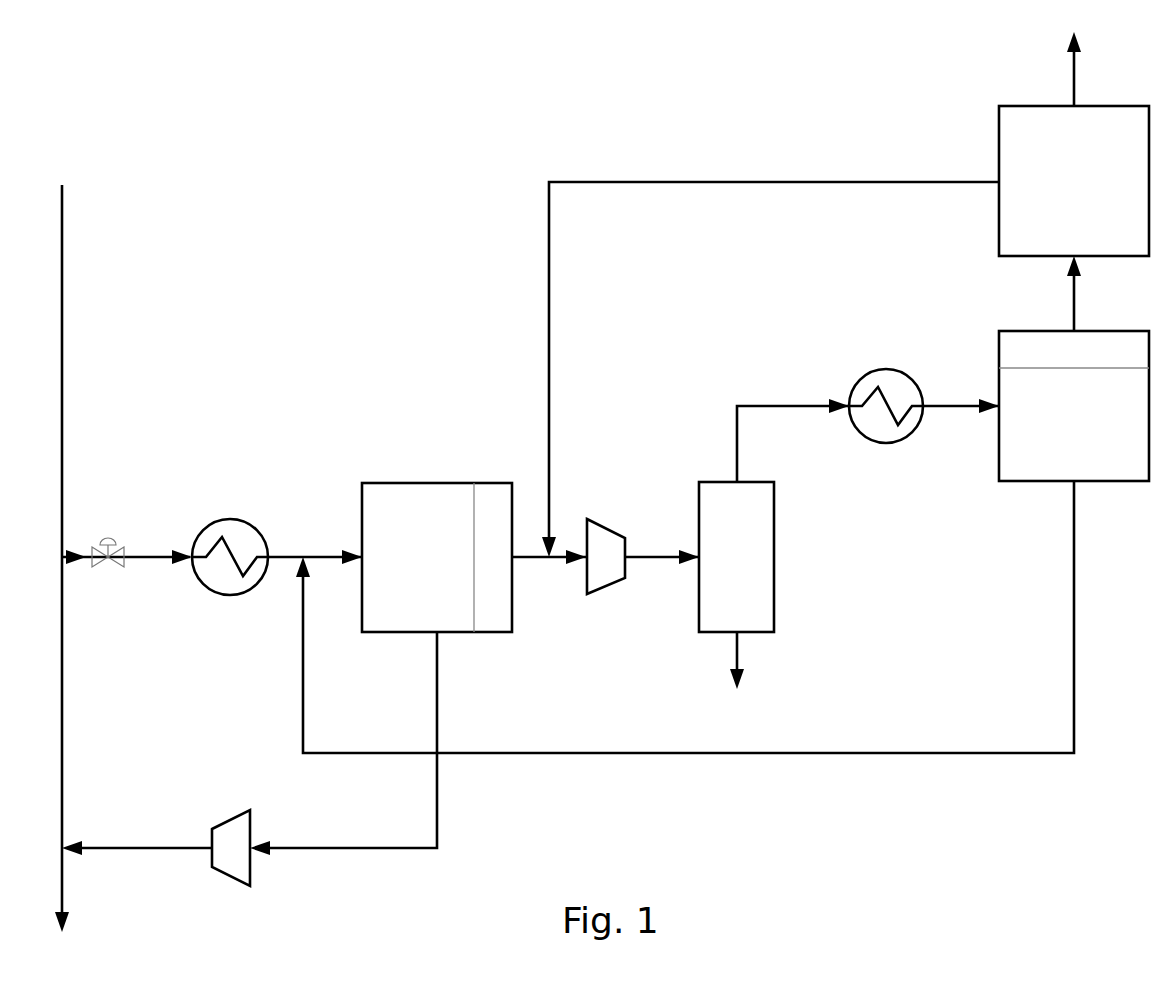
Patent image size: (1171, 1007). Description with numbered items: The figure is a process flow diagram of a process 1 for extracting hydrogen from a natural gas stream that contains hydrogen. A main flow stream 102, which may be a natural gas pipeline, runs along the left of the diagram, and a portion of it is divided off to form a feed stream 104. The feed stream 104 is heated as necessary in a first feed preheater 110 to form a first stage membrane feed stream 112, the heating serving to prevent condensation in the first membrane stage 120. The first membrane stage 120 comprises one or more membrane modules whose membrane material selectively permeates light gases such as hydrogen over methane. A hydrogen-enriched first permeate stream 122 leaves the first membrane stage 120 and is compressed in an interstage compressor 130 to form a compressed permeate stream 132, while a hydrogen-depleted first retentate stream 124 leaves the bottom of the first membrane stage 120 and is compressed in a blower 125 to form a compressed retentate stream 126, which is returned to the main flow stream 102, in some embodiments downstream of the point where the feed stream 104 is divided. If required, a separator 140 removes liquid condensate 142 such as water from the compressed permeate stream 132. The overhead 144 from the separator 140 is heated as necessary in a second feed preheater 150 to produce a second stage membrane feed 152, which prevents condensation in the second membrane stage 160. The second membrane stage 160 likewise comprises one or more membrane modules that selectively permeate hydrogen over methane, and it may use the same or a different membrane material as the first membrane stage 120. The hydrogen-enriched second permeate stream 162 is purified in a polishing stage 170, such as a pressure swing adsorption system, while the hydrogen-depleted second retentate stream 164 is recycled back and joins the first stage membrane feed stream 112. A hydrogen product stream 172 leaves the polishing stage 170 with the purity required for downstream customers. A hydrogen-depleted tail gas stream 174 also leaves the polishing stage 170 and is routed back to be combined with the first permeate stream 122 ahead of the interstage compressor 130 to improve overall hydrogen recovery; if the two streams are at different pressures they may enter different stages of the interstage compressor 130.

The system 1 is at (165, 106).
The main flow stream 102 is at (64, 318).
The feed stream 104 is at (157, 568).
The first feed preheater 110 is at (230, 518).
The first stage membrane feed stream 112 is at (325, 553).
The first membrane stage 120 is at (437, 557).
The first permeate stream 122 is at (530, 561).
The first retentate stream 124 is at (439, 658).
The blower 125 is at (228, 877).
The compressed retentate stream 126 is at (157, 843).
The interstage compressor 130 is at (605, 519).
The compressed permeate stream 132 is at (655, 565).
The separator 140 is at (736, 557).
The liquid condensate 142 is at (740, 648).
The overhead 144 is at (740, 452).
The second feed preheater 150 is at (886, 444).
The second stage membrane feed 152 is at (950, 411).
The second membrane stage 160 is at (1074, 406).
The second permeate stream 162 is at (1071, 302).
The second retentate stream 164 is at (1072, 575).
The polishing stage 170 is at (1074, 181).
The hydrogen product stream 172 is at (1071, 71).
The tail gas stream 174 is at (885, 183).